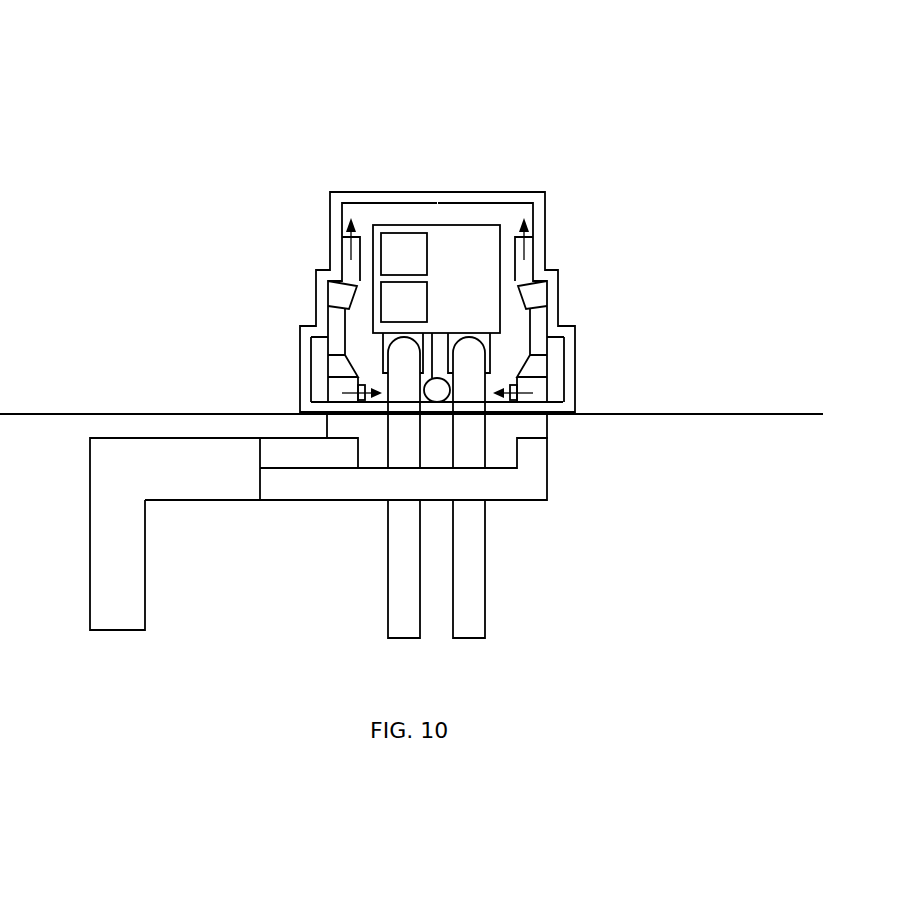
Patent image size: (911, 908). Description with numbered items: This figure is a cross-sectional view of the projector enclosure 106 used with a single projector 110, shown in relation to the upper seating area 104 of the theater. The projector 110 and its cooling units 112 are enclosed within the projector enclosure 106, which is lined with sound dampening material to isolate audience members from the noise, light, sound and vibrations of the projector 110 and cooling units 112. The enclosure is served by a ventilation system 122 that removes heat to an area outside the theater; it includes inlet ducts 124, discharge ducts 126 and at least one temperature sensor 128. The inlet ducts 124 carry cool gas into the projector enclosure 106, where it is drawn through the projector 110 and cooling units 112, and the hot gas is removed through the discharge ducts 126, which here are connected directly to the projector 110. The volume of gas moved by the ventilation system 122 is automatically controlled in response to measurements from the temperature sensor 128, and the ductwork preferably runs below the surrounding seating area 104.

The upper seating area 104 is at (137, 413).
The projector enclosure 106 is at (380, 190).
The projector 110 is at (465, 242).
The cooling unit 112 is at (397, 255).
The ventilation system 122 is at (193, 557).
The inlet duct 124 is at (273, 437).
The discharge duct 126 is at (388, 575).
The temperature sensor 128 is at (447, 380).